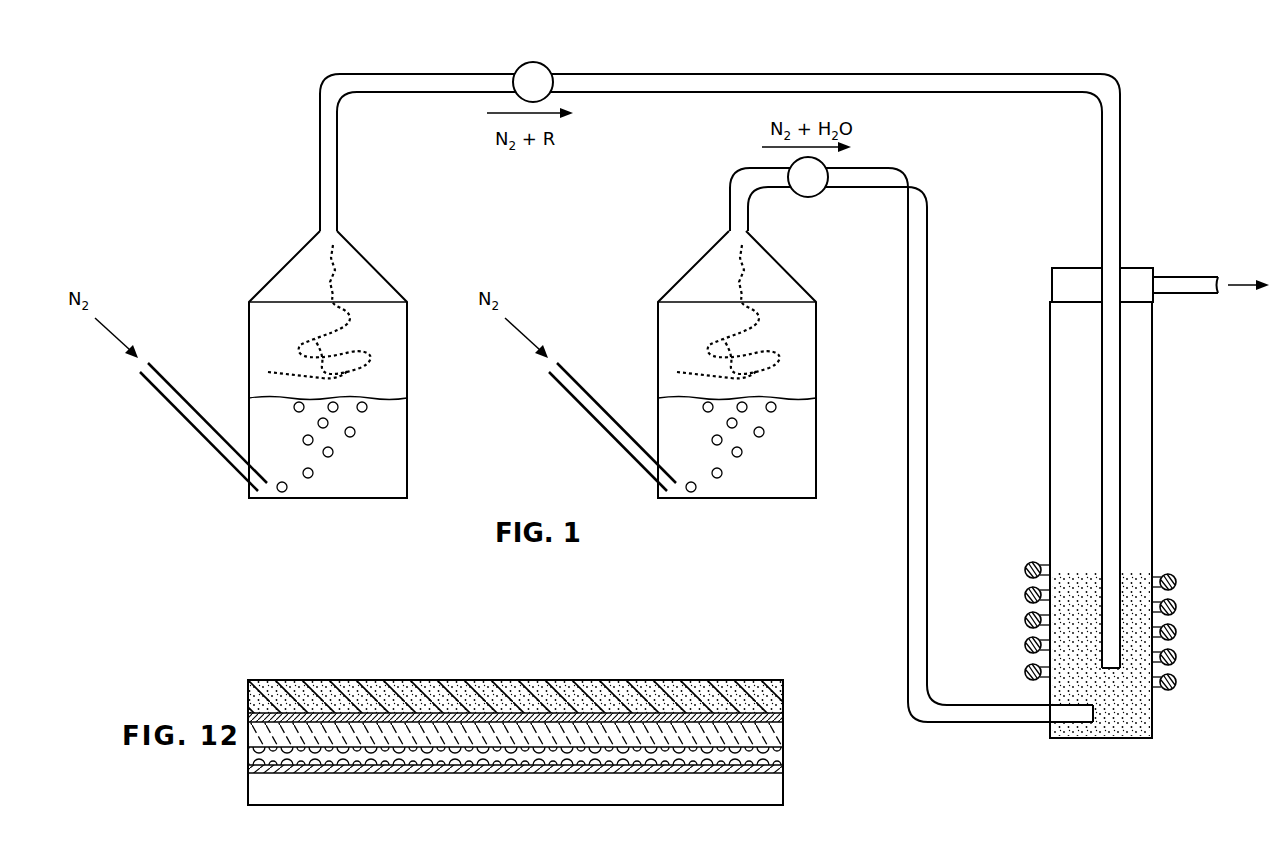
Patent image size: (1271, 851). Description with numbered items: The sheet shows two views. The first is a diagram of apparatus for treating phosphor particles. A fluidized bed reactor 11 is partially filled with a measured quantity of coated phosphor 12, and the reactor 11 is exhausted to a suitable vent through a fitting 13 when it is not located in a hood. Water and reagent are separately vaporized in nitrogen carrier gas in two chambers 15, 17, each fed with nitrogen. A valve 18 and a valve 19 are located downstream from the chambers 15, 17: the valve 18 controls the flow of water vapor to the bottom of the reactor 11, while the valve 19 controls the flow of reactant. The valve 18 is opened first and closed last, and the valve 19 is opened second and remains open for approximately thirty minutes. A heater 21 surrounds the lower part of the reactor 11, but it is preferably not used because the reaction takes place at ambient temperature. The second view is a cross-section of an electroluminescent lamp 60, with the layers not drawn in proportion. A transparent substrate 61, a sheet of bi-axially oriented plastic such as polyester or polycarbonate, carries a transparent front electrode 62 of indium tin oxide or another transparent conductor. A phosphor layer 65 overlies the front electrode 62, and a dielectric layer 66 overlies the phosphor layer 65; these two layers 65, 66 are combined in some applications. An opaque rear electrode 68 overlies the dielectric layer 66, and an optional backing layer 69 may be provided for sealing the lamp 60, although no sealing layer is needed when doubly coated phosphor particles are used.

In FIG. 1, the fluidized bed reactor 11 is at (1049, 380).
In FIG. 1, the coated phosphor 12 is at (1060, 695).
In FIG. 1, the fitting 13 is at (1200, 272).
In FIG. 1, the chamber 15 is at (658, 333).
In FIG. 1, the chamber 17 is at (249, 344).
In FIG. 1, the valve 18 is at (807, 197).
In FIG. 1, the valve 19 is at (535, 62).
In FIG. 1, the heater 21 is at (1025, 595).
In FIG. 12, the lamp 60 is at (307, 639).
In FIG. 12, the transparent substrate 61 is at (783, 790).
In FIG. 12, the transparent front electrode 62 is at (783, 769).
In FIG. 12, the phosphor layer 65 is at (783, 756).
In FIG. 12, the dielectric layer 66 is at (783, 736).
In FIG. 12, the opaque rear electrode 68 is at (783, 718).
In FIG. 12, the backing layer 69 is at (783, 697).